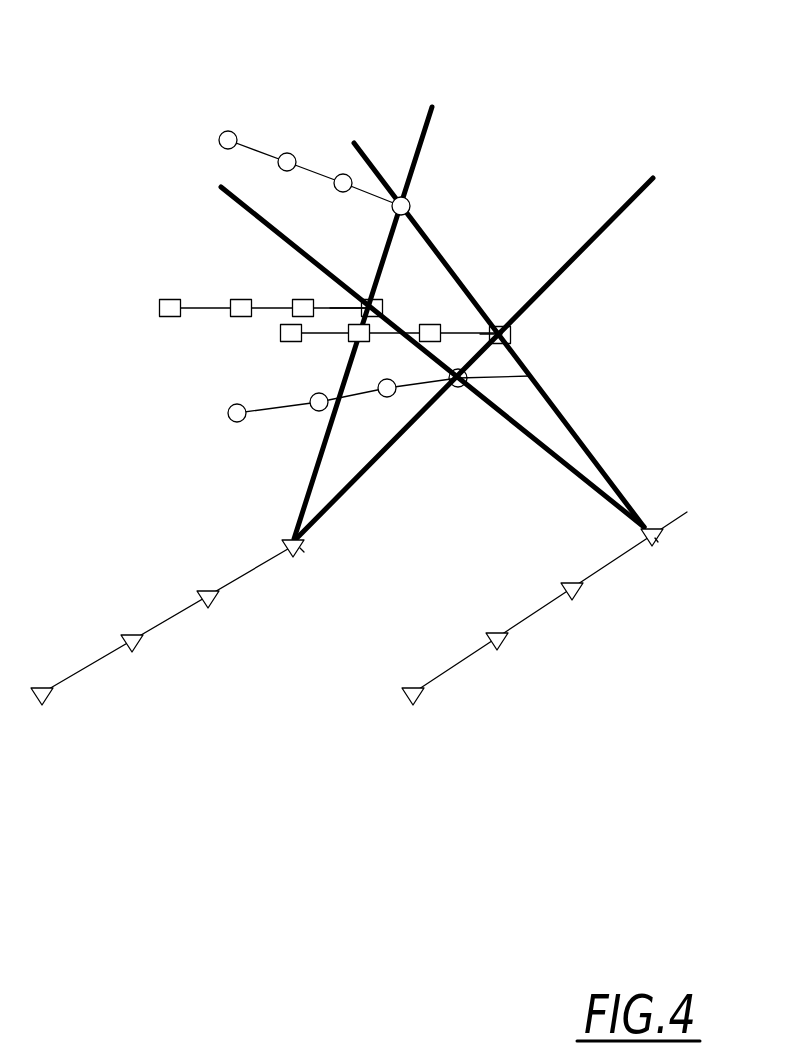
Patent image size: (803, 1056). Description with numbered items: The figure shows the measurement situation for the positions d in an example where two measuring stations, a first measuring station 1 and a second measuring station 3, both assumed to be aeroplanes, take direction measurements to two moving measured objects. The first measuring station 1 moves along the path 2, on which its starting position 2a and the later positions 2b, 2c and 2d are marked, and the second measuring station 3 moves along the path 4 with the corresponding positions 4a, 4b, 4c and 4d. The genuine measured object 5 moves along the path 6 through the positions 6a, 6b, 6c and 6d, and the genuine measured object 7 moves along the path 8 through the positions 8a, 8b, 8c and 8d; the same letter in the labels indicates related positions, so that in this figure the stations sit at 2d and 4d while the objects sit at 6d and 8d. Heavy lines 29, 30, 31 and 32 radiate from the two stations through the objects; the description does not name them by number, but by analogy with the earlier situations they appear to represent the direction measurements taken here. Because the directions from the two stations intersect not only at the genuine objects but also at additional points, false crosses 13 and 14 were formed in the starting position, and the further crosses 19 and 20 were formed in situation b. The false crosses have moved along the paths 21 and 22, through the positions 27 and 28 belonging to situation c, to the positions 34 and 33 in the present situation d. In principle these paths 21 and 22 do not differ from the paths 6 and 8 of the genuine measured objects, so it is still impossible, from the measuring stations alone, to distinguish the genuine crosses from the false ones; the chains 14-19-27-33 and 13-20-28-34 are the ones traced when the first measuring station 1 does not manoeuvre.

The first measuring station 1 is at (310, 544).
The path of first measuring station 2 is at (92, 666).
The starting position of first measuring station 2a is at (50, 700).
The position b of first measuring station 2b is at (142, 649).
The position c of first measuring station 2c is at (214, 605).
The position d of first measuring station 2d is at (306, 556).
The second measuring station 3 is at (666, 533).
The path of second measuring station 4 is at (460, 668).
The starting position of second measuring station 4a is at (420, 701).
The position b of second measuring station 4b is at (503, 645).
The position c of second measuring station 4c is at (577, 598).
The position d of second measuring station 4d is at (657, 542).
The first measured object 5 is at (381, 304).
The path of first measured object 6 is at (214, 309).
The starting position of first measured object 6a is at (160, 308).
The position b of first measured object 6b is at (241, 299).
The position c of first measured object 6c is at (303, 299).
The position d of first measured object 6d is at (368, 300).
The second measured object 7 is at (512, 331).
The path of second measured object 8 is at (330, 334).
The starting position of second measured object 8a is at (291, 342).
The position b of second measured object 8b is at (366, 341).
The position c of second measured object 8c is at (424, 324).
The position d of second measured object 8d is at (512, 333).
The false cross 13 is at (232, 418).
The false cross 14 is at (223, 131).
The further cross 19 is at (288, 153).
The further cross 20 is at (313, 412).
The path of false cross 21 is at (276, 408).
The path of false cross 22 is at (248, 145).
The false cross position c 27 is at (342, 174).
The false cross position c 28 is at (390, 397).
The main line 29 is at (428, 137).
The main line 30 is at (628, 193).
The main line 31 is at (232, 198).
The main line 32 is at (388, 188).
The false cross position d 33 is at (410, 201).
The false cross position d 34 is at (467, 378).